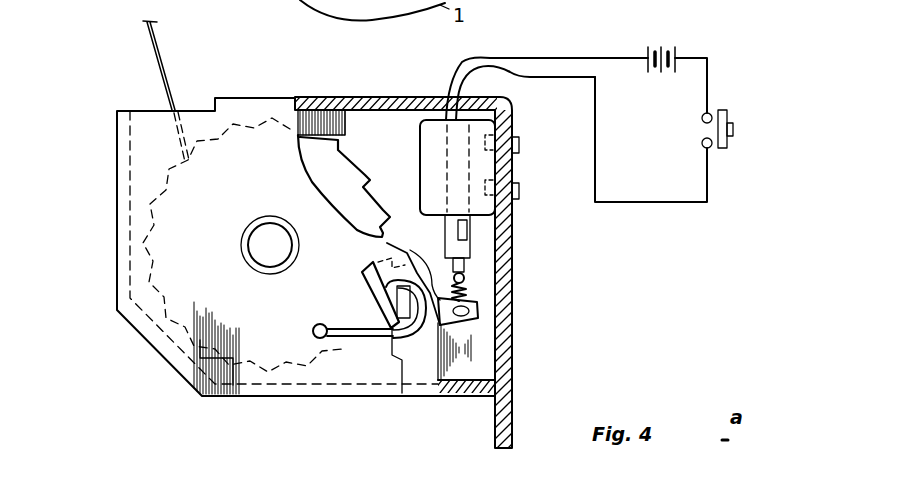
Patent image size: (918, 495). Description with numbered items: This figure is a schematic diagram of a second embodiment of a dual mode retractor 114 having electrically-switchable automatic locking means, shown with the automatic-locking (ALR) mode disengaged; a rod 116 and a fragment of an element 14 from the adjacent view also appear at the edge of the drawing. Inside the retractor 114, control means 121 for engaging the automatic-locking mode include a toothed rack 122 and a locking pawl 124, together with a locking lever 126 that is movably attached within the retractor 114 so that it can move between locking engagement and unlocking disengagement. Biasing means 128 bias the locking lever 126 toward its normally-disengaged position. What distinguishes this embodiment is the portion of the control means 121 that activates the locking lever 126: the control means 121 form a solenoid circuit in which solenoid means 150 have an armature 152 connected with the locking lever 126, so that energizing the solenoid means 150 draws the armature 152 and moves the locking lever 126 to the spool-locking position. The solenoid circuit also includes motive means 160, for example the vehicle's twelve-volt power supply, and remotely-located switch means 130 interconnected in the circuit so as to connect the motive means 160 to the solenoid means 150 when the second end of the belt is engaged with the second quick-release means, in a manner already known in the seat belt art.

The ratchet element (adjacent figure) 14 is at (329, 6).
The retractor 114 is at (167, 368).
The actuating rod 116 is at (157, 57).
The toothed rack 122 is at (313, 160).
The solenoid means 150 is at (421, 145).
The armature 152 is at (461, 229).
The locking lever 126 is at (478, 323).
The control means 121 is at (476, 262).
The motive means 160 is at (656, 45).
The switch means 130 is at (724, 148).
The locking pawl 124 is at (402, 393).
The biasing means 128 is at (357, 343).